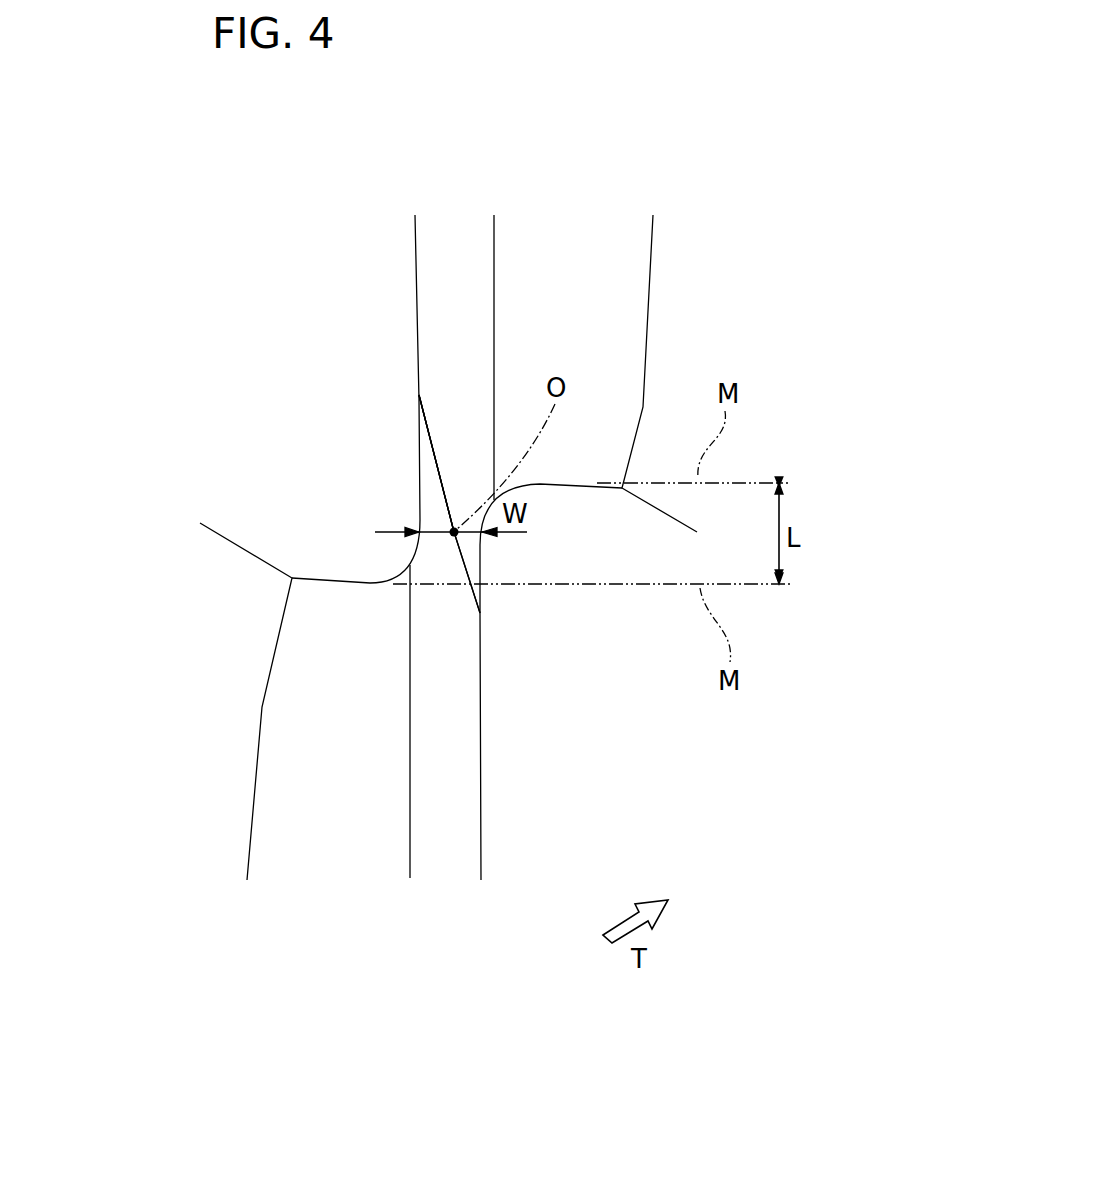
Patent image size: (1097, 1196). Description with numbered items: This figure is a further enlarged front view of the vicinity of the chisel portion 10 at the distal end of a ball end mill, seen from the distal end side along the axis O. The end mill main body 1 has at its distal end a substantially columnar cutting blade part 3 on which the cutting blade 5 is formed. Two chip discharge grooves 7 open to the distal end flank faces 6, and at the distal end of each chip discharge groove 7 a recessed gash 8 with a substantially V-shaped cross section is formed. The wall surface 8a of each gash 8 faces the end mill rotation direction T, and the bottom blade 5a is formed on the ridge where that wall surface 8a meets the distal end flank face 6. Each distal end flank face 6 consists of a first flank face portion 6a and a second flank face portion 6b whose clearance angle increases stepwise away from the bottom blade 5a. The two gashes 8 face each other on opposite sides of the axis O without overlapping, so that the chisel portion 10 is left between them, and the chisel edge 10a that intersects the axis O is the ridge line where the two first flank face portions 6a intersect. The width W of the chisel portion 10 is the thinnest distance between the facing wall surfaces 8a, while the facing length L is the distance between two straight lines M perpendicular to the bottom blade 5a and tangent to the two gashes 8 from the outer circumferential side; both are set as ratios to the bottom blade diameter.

The end mill main body 1 is at (700, 300).
The cutting blade part 3 is at (688, 168).
The cutting blade 5 is at (413, 547).
The bottom blade 5a is at (416, 328).
The distal end flank face 6 is at (492, 550).
The first flank face portion 6a is at (455, 240).
The second flank face portion 6b is at (555, 247).
The chip discharge groove 7 is at (385, 411).
The gash 8 is at (464, 532).
The wall surface 8a is at (392, 360).
The chisel portion 10 is at (396, 485).
The chisel edge 10a is at (442, 470).